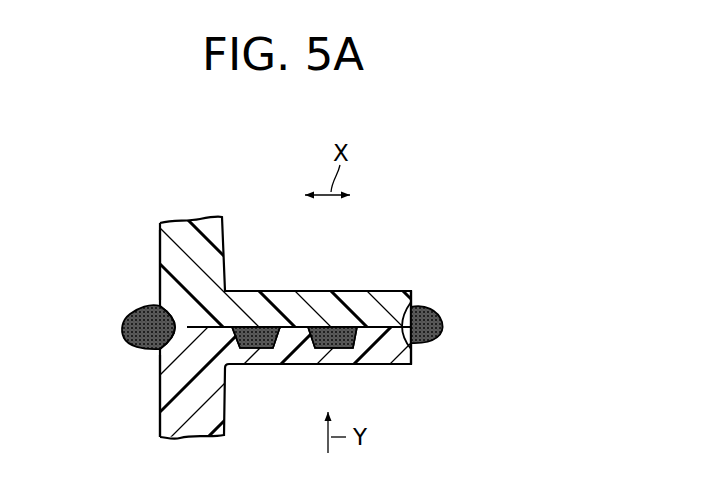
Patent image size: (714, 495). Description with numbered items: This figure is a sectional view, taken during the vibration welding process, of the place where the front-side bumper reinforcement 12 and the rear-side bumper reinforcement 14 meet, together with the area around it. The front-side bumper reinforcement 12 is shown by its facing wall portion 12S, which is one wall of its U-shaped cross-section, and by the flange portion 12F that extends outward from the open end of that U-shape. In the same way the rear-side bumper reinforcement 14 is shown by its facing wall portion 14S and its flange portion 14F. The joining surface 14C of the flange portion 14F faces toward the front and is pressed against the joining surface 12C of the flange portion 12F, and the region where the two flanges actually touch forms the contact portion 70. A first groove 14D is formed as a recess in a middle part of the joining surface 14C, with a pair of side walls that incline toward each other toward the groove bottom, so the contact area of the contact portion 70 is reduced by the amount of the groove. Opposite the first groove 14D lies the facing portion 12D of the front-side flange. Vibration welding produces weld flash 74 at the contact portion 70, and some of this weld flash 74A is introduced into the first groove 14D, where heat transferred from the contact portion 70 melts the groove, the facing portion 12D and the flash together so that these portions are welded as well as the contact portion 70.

The front-side bumper reinforcement 12 is at (231, 228).
The facing wall portion 12S is at (158, 245).
The facing portion 12D is at (276, 325).
The flange portion 12F is at (384, 287).
The joining surface 12C is at (413, 352).
The rear-side bumper reinforcement 14 is at (246, 410).
The facing wall portion 14S is at (158, 400).
The first groove 14D is at (292, 337).
The joining surface 14C is at (372, 313).
The flange portion 14F is at (375, 370).
The contact portion 70 is at (203, 318).
The weld flash 74 is at (128, 348).
The weld flash in first groove 74A is at (238, 326).